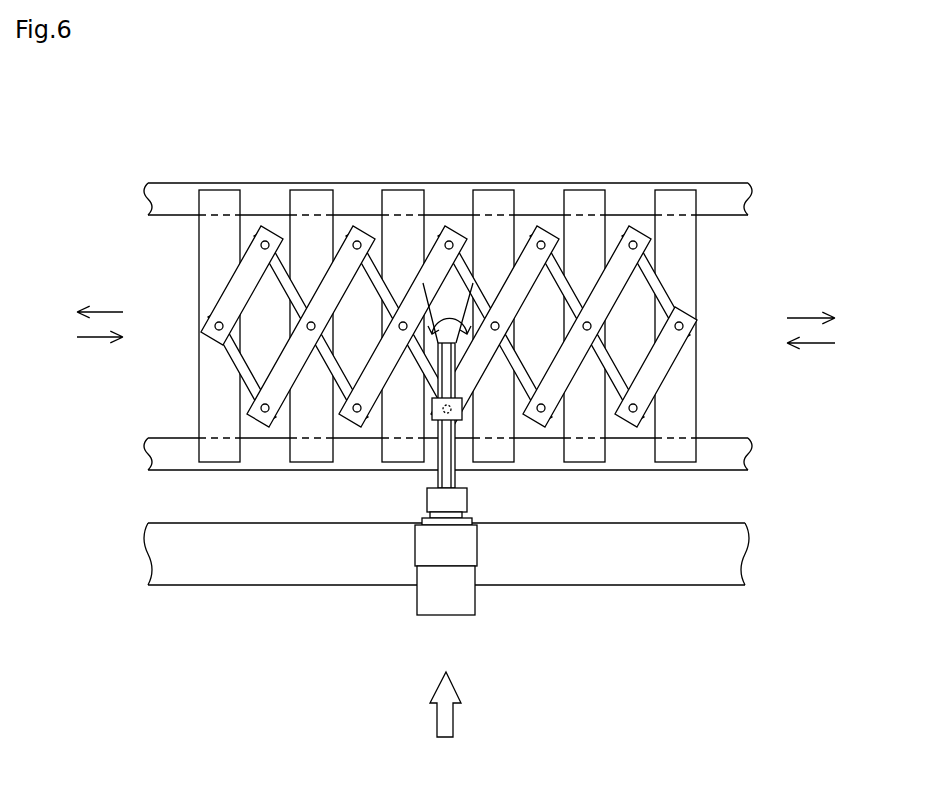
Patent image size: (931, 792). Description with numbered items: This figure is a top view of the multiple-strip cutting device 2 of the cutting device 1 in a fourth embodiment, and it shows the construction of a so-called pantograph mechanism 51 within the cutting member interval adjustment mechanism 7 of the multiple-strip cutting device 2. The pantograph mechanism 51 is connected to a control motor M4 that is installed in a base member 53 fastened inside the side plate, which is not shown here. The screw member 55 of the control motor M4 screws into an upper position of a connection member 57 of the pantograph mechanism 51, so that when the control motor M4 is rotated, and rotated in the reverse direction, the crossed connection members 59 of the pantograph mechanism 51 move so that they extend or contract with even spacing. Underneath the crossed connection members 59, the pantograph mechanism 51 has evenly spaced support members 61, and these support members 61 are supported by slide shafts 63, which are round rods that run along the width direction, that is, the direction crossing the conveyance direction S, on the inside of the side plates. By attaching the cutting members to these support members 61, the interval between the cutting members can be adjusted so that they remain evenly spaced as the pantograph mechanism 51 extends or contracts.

The cutting device 1 is at (781, 164).
The multiple-strip cutting device 2 is at (87, 182).
The cutting member interval adjustment mechanism 7 is at (96, 237).
The pantograph mechanism 51 is at (653, 292).
The base member 53 is at (207, 550).
The screw member 55 is at (456, 448).
The connection member 57 is at (543, 240).
The crossed connection members 59 is at (402, 322).
The support members 61 is at (220, 203).
The slide shafts 63 is at (182, 192).
The control motor M4 is at (432, 593).
The conveyance direction S is at (490, 736).